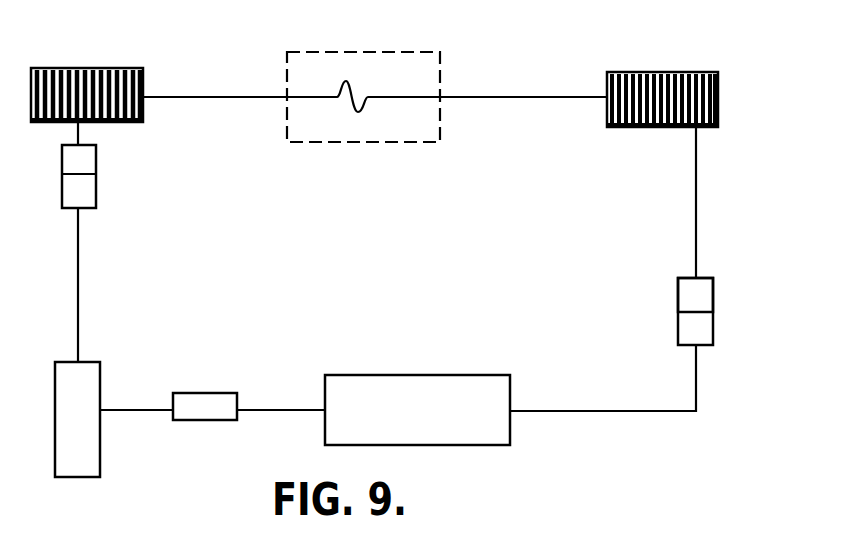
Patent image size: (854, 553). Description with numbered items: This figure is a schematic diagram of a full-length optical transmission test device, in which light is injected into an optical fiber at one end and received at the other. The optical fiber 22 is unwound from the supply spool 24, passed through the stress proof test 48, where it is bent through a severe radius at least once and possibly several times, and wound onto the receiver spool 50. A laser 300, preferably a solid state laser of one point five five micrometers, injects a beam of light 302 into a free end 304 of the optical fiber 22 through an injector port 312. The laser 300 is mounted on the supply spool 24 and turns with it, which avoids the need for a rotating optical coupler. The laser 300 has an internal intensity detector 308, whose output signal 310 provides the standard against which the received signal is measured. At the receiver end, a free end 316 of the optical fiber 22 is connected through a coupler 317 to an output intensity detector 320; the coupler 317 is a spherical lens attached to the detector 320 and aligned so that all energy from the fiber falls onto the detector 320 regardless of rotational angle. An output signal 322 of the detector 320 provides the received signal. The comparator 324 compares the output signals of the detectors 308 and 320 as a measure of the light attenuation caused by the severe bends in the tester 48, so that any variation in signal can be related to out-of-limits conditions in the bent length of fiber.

The supply spool 24 is at (96, 68).
The optical fiber 22 is at (213, 98).
The stress proof test 48 is at (393, 143).
The receiver spool 50 is at (657, 78).
The free end of the optical fiber 316 is at (695, 187).
The coupler 317 is at (677, 292).
The output intensity detector 320 is at (678, 333).
The output signal 322 is at (583, 412).
The comparator 324 is at (492, 373).
The output signal 310 is at (270, 407).
The internal intensity detector 308 is at (195, 393).
The laser 300 is at (100, 470).
The beam of light 302 is at (77, 218).
The injector port 312 is at (92, 167).
The free end of the optical fiber 304 is at (77, 131).